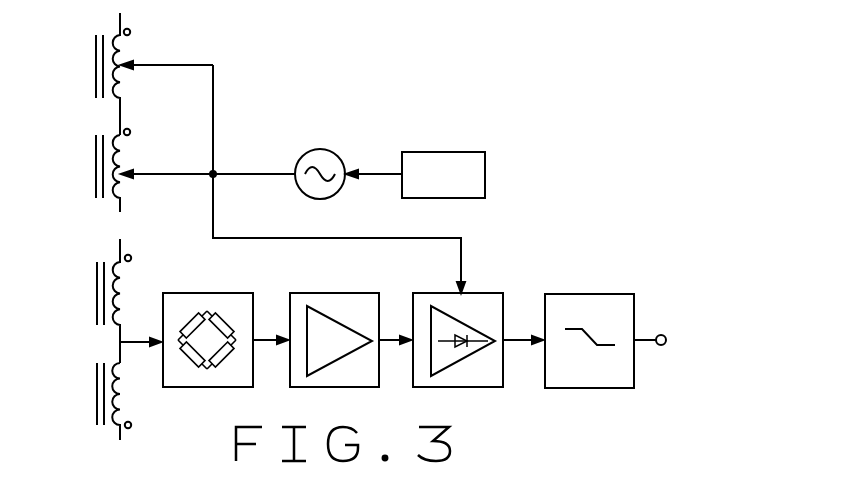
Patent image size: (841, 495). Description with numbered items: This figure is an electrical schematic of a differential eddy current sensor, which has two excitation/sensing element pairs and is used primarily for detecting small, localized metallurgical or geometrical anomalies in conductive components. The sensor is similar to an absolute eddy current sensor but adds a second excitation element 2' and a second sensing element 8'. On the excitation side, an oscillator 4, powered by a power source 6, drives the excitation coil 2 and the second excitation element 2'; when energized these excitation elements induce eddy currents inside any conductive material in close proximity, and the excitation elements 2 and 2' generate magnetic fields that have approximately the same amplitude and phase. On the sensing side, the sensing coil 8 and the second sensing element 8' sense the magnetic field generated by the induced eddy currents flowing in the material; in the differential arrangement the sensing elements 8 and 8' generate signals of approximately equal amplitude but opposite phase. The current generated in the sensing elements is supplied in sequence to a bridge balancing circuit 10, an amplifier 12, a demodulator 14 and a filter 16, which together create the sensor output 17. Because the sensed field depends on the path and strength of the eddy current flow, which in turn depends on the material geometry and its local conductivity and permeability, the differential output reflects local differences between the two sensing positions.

The excitation coil 2 is at (98, 74).
The second excitation element 2' is at (96, 170).
The oscillator 4 is at (325, 149).
The power source 6 is at (470, 152).
The sensing coil 8 is at (98, 301).
The second sensing element 8' is at (96, 401).
The bridge balancing circuit 10 is at (238, 293).
The amplifier 12 is at (351, 293).
The demodulator 14 is at (477, 293).
The filter 16 is at (604, 294).
The sensor output 17 is at (664, 334).